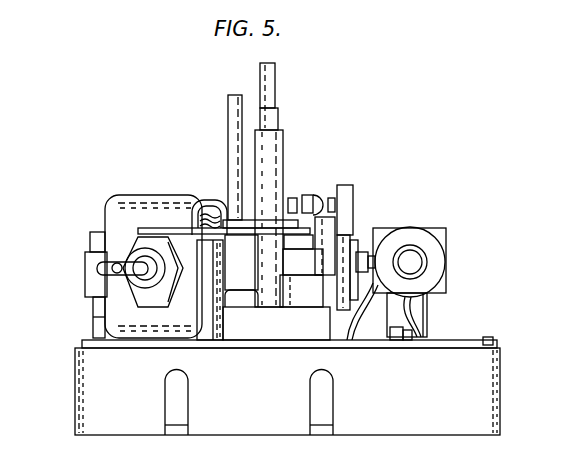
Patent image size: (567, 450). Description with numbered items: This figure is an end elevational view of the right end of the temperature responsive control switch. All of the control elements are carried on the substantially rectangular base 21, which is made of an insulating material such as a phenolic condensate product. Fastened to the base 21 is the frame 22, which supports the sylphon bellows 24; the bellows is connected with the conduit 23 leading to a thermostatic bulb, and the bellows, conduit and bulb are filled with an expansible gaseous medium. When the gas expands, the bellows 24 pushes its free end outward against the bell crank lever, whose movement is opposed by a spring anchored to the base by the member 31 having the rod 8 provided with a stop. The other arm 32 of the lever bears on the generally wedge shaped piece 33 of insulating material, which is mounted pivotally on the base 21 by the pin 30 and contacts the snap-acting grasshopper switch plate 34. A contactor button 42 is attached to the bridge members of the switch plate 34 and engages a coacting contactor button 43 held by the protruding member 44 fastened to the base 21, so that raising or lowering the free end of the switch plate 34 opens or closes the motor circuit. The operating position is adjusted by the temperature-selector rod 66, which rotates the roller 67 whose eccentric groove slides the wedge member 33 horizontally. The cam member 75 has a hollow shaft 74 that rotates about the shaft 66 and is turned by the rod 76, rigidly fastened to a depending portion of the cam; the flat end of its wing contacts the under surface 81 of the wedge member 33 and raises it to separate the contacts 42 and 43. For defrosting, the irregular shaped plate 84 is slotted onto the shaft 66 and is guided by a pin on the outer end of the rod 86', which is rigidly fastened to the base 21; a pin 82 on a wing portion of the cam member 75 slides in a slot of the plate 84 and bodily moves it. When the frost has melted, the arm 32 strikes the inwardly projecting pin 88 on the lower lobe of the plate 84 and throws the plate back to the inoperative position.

The base 21 is at (475, 388).
The frame 22 is at (113, 210).
The conduit 23 is at (122, 283).
The sylphon bellows 24 is at (210, 215).
The pin 30 is at (295, 199).
The member 31 is at (90, 240).
The arm 32 is at (240, 285).
The wedge shaped piece 33 is at (297, 290).
The switch plate 34 is at (320, 198).
The contactor button 42 is at (352, 237).
The coacting contactor button 43 is at (360, 273).
The protruding member 44 is at (385, 230).
The temperature-selector shaft 66 is at (276, 84).
The roller 67 is at (272, 333).
The hollow shaft 74 is at (283, 150).
The cam member 75 is at (250, 226).
The rod 76 is at (228, 124).
The under surface 81 is at (350, 226).
The pin 82 is at (292, 244).
The irregular shaped plate 84 is at (150, 232).
The rod 86' is at (210, 306).
The inwardly projecting pin 88 is at (150, 250).
The rod 8 is at (97, 268).